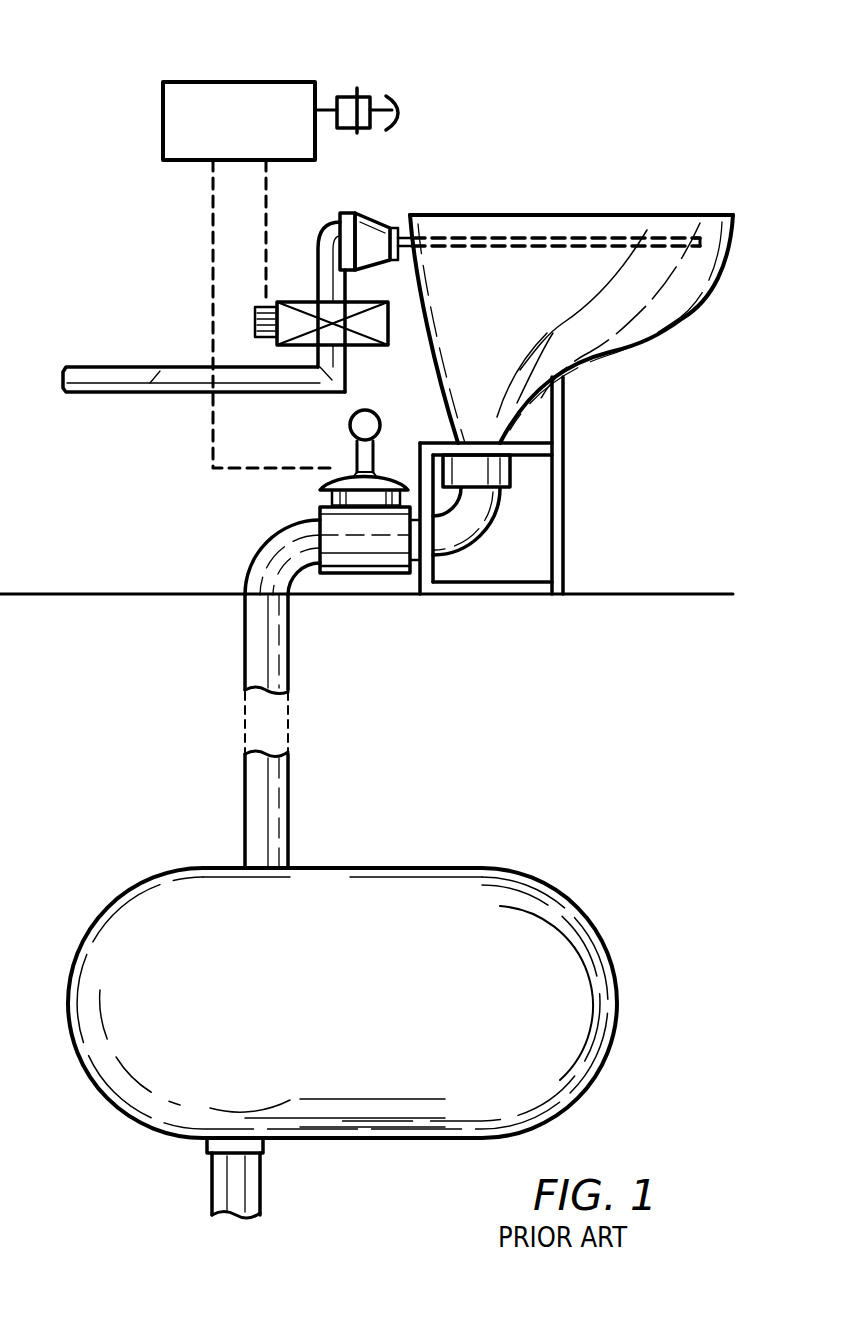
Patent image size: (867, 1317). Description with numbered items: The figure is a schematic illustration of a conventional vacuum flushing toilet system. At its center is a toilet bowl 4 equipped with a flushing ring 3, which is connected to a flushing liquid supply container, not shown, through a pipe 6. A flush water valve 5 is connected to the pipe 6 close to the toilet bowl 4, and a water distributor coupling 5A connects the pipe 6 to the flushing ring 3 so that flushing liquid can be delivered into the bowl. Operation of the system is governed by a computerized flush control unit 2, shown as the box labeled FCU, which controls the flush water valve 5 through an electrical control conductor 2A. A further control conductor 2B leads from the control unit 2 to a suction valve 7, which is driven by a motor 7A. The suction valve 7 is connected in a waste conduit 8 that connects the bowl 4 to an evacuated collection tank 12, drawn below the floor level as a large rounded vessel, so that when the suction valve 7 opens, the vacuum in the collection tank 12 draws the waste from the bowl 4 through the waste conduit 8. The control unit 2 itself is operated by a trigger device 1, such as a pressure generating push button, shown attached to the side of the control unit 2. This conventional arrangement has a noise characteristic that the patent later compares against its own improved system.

The trigger device 1 is at (388, 100).
The flush control unit 2 is at (188, 92).
The electrical control conductor 2A is at (266, 196).
The control conductor 2B is at (212, 213).
The flushing ring 3 is at (440, 240).
The toilet bowl 4 is at (604, 308).
The flush water valve 5 is at (285, 321).
The water distributor coupling 5A is at (372, 230).
The pipe 6 is at (155, 394).
The suction valve 7 is at (321, 515).
The motor 7A is at (371, 413).
The waste conduit 8 is at (266, 803).
The collection tank 12 is at (226, 884).